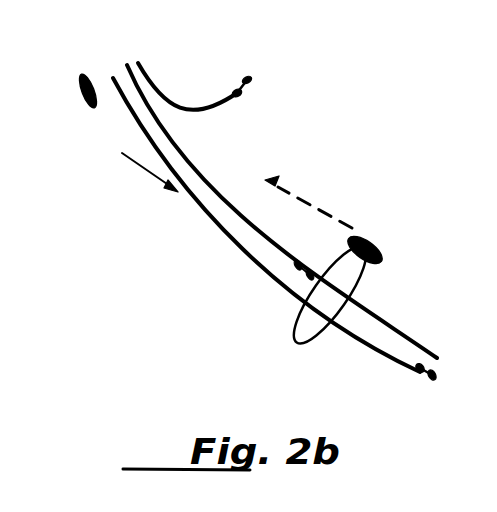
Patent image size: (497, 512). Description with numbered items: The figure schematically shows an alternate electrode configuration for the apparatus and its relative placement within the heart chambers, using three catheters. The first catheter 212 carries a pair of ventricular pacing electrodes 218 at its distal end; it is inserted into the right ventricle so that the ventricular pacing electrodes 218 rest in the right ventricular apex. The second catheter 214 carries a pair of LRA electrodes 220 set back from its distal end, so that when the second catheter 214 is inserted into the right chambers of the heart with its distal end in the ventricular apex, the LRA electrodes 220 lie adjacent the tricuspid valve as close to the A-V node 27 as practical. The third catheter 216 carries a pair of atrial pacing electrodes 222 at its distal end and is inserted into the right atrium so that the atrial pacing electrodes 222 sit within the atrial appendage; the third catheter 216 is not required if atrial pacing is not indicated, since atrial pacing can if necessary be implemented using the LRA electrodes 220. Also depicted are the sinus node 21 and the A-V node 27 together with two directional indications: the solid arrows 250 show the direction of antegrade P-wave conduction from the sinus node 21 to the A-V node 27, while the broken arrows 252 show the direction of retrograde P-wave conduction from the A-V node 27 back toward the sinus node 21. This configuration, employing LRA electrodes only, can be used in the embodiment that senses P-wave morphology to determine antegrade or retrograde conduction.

The sinus node 21 is at (78, 89).
The A-V node 27 is at (372, 247).
The first catheter 212 is at (130, 117).
The second catheter 214 is at (140, 84).
The third catheter 216 is at (182, 104).
The ventricular pacing electrodes 218 is at (430, 380).
The LRA electrodes 220 is at (312, 268).
The atrial pacing electrodes 222 is at (250, 95).
The solid arrows 250 is at (142, 170).
The broken arrows 252 is at (312, 204).